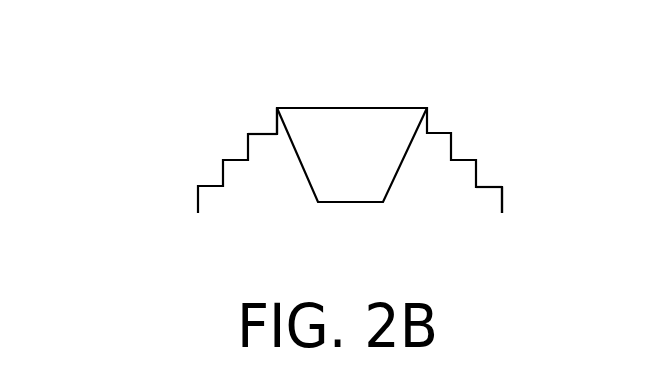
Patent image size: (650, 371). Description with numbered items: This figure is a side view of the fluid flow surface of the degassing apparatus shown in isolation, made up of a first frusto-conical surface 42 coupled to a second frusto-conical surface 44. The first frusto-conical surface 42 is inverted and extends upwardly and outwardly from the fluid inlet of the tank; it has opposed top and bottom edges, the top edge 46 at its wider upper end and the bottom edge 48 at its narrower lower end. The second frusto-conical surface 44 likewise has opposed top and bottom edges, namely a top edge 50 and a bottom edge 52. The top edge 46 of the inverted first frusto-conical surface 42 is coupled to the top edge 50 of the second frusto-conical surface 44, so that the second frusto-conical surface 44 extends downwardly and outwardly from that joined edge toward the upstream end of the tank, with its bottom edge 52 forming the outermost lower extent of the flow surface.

The first frusto-conical surface 42 is at (402, 158).
The second frusto-conical surface 44 is at (205, 186).
The top edge 46 is at (380, 108).
The bottom edge 48 is at (340, 202).
The top edge 50 is at (277, 108).
The bottom edge 52 is at (505, 208).